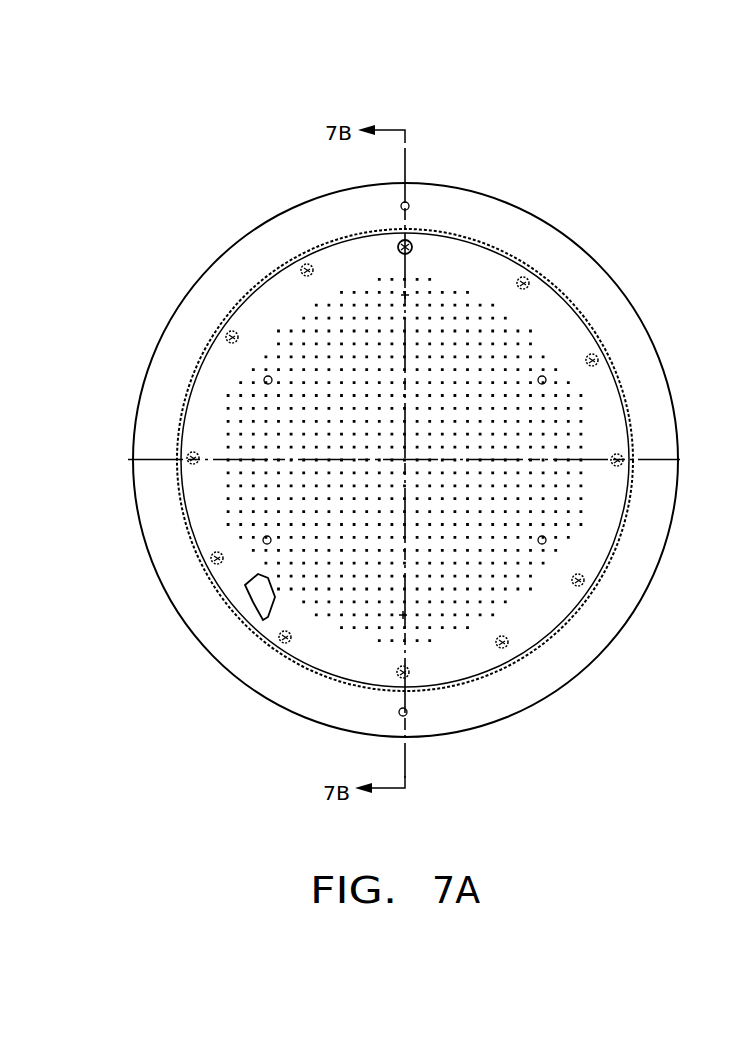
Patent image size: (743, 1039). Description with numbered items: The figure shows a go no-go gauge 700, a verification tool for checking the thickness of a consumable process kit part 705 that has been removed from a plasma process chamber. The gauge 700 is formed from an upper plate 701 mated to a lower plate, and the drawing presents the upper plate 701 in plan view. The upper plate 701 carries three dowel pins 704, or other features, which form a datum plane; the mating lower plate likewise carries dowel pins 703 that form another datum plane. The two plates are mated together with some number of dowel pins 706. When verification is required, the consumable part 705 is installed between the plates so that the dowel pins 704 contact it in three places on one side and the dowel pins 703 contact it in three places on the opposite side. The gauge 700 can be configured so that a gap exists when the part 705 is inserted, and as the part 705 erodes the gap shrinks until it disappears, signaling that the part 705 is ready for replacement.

The go no-go gauge 700 is at (506, 111).
The upper plate 701 is at (230, 282).
The dowel pins 703 is at (408, 294).
The dowel pins 704 is at (265, 378).
The process kit part 705 is at (258, 592).
The dowel pins 706 is at (409, 204).